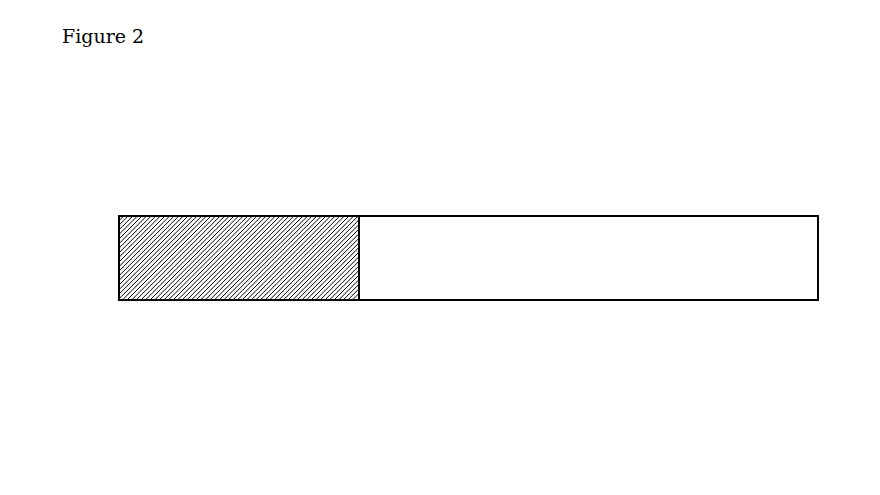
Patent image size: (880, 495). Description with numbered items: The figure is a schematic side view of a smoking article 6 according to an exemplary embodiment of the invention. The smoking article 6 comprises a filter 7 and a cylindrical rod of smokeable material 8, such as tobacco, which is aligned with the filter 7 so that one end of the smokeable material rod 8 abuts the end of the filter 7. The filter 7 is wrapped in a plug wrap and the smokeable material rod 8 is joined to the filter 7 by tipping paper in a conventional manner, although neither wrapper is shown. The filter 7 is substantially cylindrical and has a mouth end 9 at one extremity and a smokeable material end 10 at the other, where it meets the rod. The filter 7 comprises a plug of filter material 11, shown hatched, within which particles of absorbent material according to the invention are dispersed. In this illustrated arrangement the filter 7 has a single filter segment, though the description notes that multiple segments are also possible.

The smoking article 6 is at (371, 351).
The filter 7 is at (239, 287).
The cylindrical rod of smokeable material 8 is at (583, 230).
The mouth end 9 is at (122, 276).
The smokeable material end 10 is at (360, 217).
The plug of filter material 11 is at (207, 242).